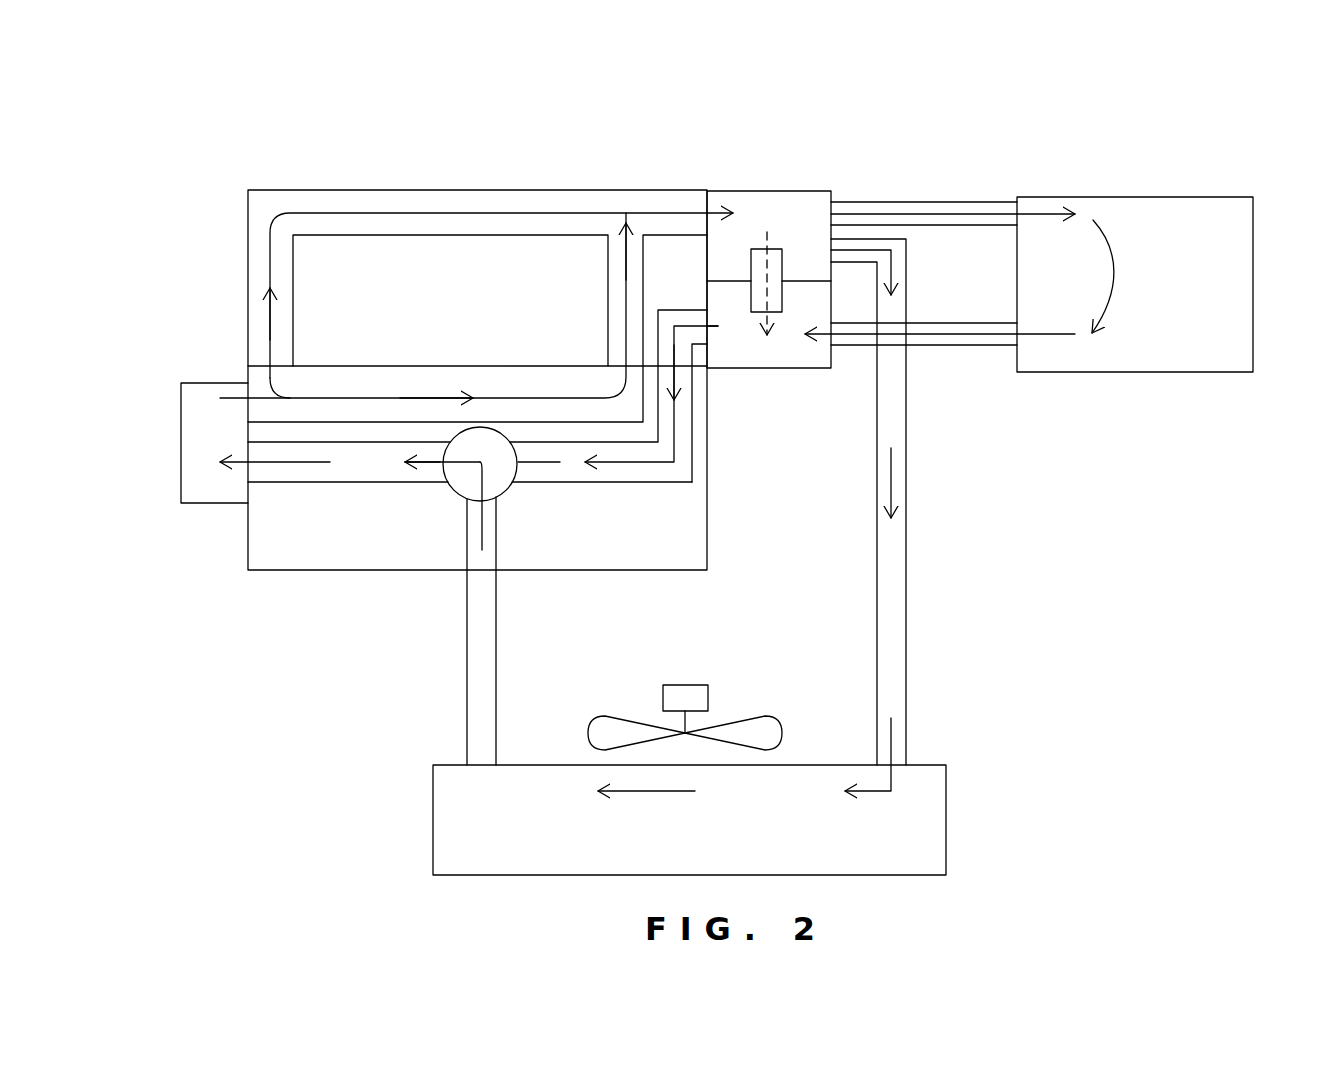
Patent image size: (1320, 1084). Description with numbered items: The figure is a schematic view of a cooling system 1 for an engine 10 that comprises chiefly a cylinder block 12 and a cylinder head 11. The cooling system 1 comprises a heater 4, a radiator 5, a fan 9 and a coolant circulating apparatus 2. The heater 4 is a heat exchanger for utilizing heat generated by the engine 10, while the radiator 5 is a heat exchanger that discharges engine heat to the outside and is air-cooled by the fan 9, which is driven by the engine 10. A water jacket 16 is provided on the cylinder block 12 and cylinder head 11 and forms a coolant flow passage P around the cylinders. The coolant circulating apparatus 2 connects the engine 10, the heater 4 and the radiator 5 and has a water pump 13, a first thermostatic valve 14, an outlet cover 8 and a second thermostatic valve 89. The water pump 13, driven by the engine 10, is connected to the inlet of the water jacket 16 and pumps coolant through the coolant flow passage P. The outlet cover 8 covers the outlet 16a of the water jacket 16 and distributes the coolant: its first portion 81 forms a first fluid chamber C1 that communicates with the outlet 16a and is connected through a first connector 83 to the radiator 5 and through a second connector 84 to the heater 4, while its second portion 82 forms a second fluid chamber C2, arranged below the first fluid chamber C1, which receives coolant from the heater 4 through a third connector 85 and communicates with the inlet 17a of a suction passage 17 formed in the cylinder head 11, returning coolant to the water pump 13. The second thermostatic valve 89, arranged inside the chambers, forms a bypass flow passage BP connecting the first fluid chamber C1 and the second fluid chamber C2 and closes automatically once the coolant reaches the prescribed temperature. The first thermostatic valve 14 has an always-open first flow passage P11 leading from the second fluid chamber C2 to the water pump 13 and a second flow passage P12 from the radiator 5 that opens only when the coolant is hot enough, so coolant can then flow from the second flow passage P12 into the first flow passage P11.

The cooling system 1 is at (1048, 523).
The coolant circulating apparatus 2 is at (993, 180).
The heater 4 is at (1235, 180).
The radiator 5 is at (965, 813).
The outlet cover 8 is at (823, 182).
The fan 9 is at (722, 697).
The engine 10 is at (252, 172).
The cylinder head 11 is at (505, 343).
The cylinder block 12 is at (320, 557).
The water pump 13 is at (190, 414).
The first thermostatic valve 14 is at (458, 487).
The water jacket 16 is at (343, 203).
The outlet of the water jacket 16a is at (698, 208).
The suction passage 17 is at (688, 472).
The inlet of the suction passage 17a is at (697, 347).
The first portion 81 is at (718, 190).
The second portion 82 is at (797, 372).
The first connector 83 is at (907, 262).
The second connector 84 is at (928, 202).
The third connector 85 is at (937, 346).
The second thermostatic valve 89 is at (777, 248).
The bypass flow passage BP is at (752, 272).
The first fluid chamber C1 is at (795, 208).
The second fluid chamber C2 is at (812, 357).
The coolant flow passage P is at (530, 213).
The first flow passage P11 is at (547, 465).
The second flow passage P12 is at (482, 685).